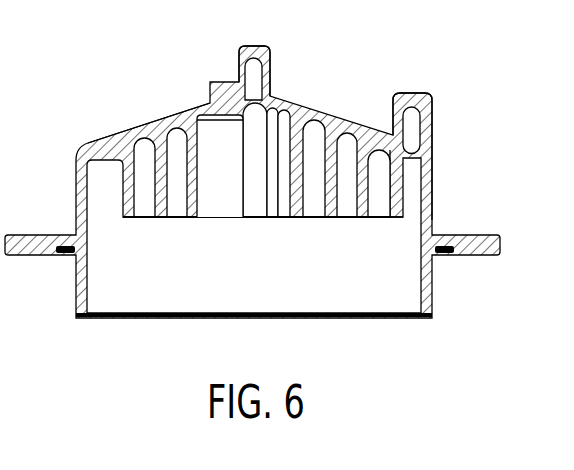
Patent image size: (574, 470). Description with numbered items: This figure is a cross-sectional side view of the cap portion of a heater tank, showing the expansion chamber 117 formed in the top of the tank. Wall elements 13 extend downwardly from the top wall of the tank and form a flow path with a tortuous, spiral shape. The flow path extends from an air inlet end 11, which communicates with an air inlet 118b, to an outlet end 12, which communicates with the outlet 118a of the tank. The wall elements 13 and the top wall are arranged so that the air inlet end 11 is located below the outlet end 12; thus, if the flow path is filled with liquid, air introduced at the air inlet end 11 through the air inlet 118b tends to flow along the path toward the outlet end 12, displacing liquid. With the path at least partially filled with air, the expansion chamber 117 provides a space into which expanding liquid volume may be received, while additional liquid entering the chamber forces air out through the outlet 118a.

The air inlet end 11 is at (410, 192).
The outlet end 12 is at (223, 181).
The wall elements 13 is at (128, 211).
The expansion chamber 117 is at (148, 124).
The outlet 118a is at (239, 60).
The air inlet 118b is at (424, 102).